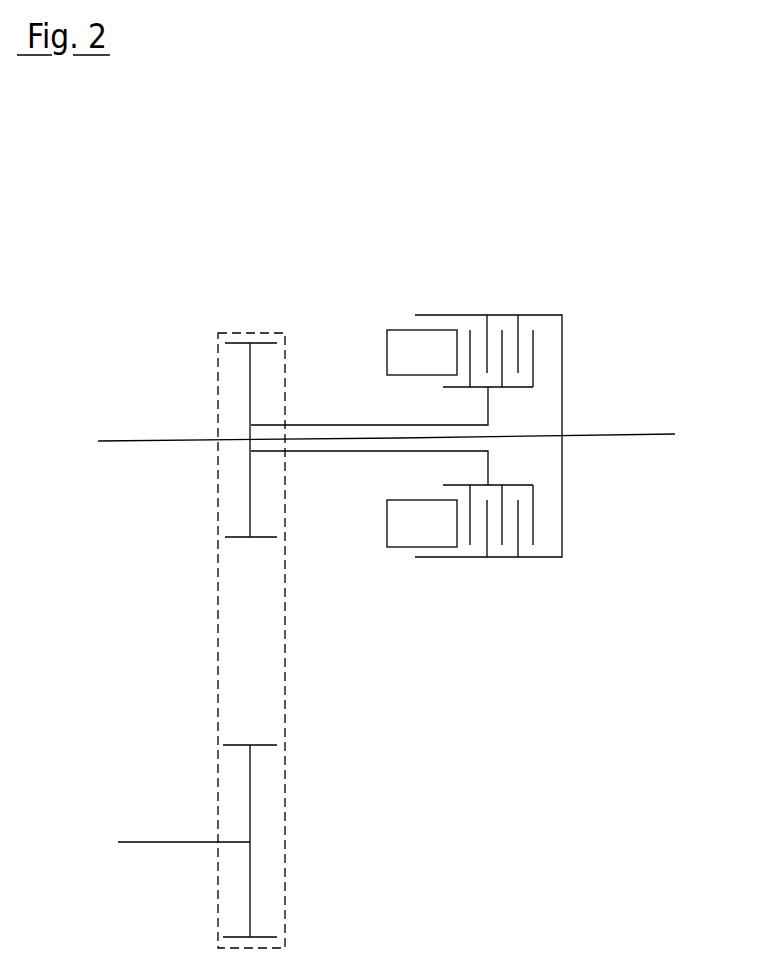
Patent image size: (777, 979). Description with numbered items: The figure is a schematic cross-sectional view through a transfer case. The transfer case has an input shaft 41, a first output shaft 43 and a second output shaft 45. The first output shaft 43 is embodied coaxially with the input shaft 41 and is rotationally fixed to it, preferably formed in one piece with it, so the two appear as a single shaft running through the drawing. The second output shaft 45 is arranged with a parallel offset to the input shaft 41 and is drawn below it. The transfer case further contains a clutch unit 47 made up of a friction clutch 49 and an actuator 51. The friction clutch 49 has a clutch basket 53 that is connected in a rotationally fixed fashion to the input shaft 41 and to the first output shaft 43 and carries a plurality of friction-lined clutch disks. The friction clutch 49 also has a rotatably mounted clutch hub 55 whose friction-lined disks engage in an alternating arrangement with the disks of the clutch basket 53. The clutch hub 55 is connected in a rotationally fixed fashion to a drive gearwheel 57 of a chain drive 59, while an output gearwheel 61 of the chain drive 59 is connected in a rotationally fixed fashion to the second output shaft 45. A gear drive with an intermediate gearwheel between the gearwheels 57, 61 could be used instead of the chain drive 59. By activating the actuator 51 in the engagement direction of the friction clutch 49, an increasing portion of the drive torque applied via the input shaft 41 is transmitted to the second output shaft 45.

The input shaft 41 is at (125, 440).
The first output shaft 43 is at (653, 433).
The second output shaft 45 is at (145, 842).
The clutch unit 47 is at (441, 374).
The friction clutch 49 is at (508, 318).
The actuator 51 is at (380, 340).
The clutch basket 53 is at (545, 315).
The clutch hub 55 is at (522, 387).
The drive gearwheel 57 is at (250, 370).
The chain drive 59 is at (210, 640).
The output gearwheel 61 is at (248, 892).